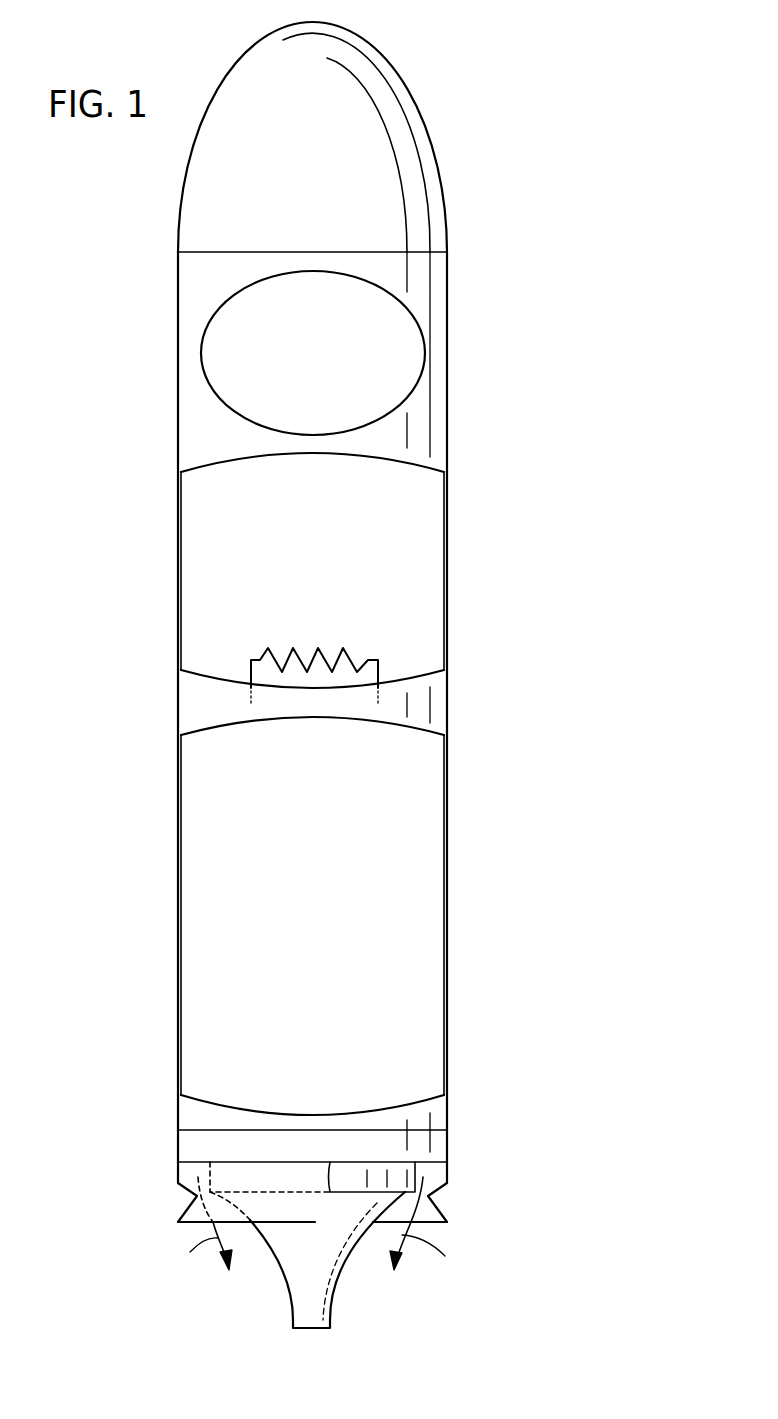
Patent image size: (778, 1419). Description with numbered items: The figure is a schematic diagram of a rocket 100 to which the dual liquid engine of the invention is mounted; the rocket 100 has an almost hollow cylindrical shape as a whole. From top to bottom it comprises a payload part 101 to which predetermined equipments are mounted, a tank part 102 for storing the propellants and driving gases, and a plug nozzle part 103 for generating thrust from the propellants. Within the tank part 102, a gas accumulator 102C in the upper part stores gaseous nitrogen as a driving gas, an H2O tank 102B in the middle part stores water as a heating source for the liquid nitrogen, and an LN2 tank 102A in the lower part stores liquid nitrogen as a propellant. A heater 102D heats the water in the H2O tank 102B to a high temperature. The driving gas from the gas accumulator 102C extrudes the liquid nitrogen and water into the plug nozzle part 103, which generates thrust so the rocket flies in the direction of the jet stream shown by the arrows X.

The rocket 100 is at (520, 157).
The payload part 101 is at (335, 170).
The tank part 102 is at (447, 518).
The LN2 tank 102A is at (305, 926).
The H2O tank 102B is at (303, 568).
The gas accumulator 102C is at (346, 368).
The heater 102D is at (355, 658).
The plug nozzle part 103 is at (463, 1192).